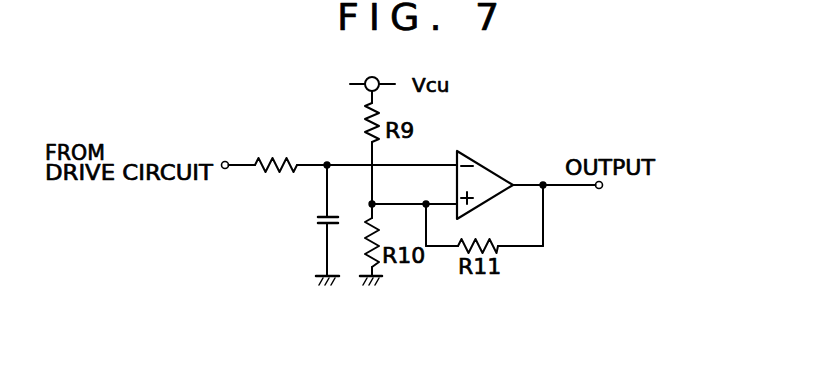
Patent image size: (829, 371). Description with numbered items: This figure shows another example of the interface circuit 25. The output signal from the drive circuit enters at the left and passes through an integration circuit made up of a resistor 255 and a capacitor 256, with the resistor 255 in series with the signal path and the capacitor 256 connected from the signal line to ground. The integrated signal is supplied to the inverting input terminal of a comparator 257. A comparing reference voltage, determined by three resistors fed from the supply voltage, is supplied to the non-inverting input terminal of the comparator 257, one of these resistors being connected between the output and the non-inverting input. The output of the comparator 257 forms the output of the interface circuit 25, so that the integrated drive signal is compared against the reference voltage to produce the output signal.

The interface circuit 25 is at (312, 86).
The resistor 255 is at (268, 172).
The capacitor 256 is at (318, 220).
The comparator 257 is at (482, 168).